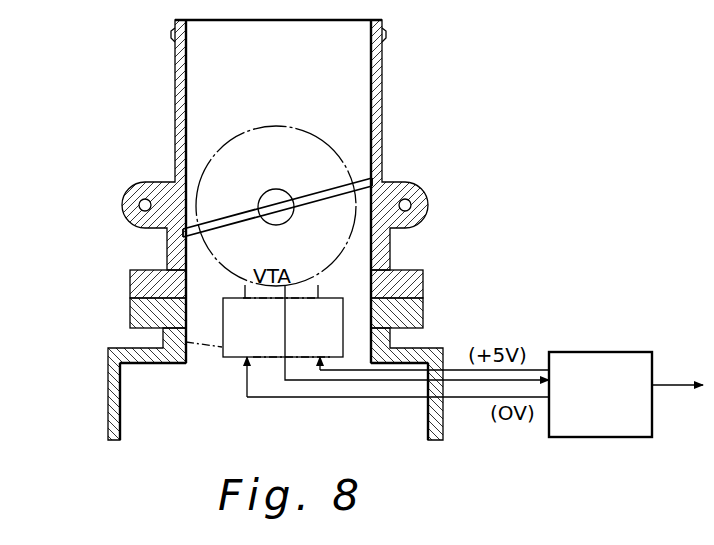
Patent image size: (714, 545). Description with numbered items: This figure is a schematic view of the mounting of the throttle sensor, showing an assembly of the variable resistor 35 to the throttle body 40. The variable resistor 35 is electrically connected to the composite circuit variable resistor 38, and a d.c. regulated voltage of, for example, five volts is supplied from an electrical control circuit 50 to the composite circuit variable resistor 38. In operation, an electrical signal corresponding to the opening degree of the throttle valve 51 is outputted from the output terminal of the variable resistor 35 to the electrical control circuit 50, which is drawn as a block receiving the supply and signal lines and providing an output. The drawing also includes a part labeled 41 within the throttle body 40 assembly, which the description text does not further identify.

The throttle body 40 is at (383, 68).
The variable resistor 35 is at (322, 136).
The throttle valve 51 is at (372, 168).
The throttle shaft 41 is at (263, 192).
The composite circuit variable resistor 38 is at (165, 342).
The electrical control circuit 50 is at (600, 352).